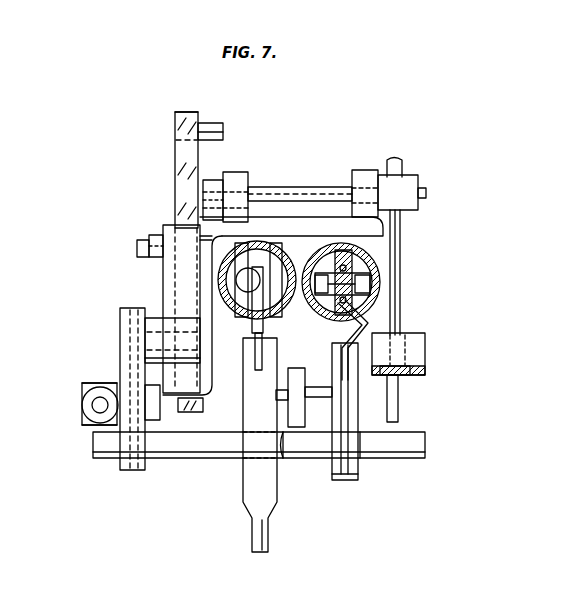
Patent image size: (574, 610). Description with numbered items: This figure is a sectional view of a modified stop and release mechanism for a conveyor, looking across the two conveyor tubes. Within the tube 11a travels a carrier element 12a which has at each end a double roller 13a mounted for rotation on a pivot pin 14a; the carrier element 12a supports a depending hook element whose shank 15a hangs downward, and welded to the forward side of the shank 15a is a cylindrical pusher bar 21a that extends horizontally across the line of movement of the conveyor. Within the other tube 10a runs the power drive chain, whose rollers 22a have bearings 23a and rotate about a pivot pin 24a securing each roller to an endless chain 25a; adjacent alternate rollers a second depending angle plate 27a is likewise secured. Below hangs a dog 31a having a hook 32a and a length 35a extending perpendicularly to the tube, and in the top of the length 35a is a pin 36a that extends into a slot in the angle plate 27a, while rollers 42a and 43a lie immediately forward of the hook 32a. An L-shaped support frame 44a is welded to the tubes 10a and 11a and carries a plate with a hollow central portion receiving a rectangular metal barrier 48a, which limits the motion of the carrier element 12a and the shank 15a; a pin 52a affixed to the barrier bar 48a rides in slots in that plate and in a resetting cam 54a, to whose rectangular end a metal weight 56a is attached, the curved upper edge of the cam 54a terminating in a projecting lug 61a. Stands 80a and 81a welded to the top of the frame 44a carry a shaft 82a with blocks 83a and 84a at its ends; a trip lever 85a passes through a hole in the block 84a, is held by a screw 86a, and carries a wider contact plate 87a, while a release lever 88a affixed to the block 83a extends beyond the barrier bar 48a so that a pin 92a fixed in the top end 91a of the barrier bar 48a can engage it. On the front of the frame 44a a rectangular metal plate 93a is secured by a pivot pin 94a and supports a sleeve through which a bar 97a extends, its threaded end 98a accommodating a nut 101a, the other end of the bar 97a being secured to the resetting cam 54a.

The tube 10a is at (306, 254).
The tube 11a is at (237, 325).
The carrier element 12a is at (263, 326).
The double roller 13a is at (273, 258).
The pivot pin 14a is at (236, 282).
The shank 15a is at (246, 484).
The cylindrical pusher bar 21a is at (425, 441).
The roller 22a is at (348, 262).
The bearing 23a is at (346, 270).
The pivot pin 24a is at (372, 284).
The endless chain 25a is at (398, 386).
The second depending angle plate 27a is at (362, 320).
The dog 31a is at (335, 443).
The hook 32a is at (352, 478).
The length 35a is at (379, 445).
The pin 36a is at (296, 369).
The roller 42a is at (396, 414).
The roller 43a is at (282, 435).
The L-shaped support frame 44a is at (170, 270).
The rectangular metal barrier 48a is at (186, 160).
The pin 52a is at (136, 247).
The resetting cam 54a is at (150, 294).
The metal weight 56a is at (133, 470).
The projecting lug 61a is at (155, 235).
The stand 80a is at (236, 180).
The stand 81a is at (365, 178).
The shaft 82a is at (302, 188).
The block 83a is at (213, 180).
The block 84a is at (410, 180).
The trip lever 85a is at (402, 268).
The screw 86a is at (428, 193).
The contact plate 87a is at (418, 352).
The release lever 88a is at (205, 196).
The top end 91a is at (176, 117).
The pin 92a is at (213, 128).
The rectangular metal plate 93a is at (157, 322).
The pivot pin 94a is at (148, 347).
The bar 97a is at (98, 405).
The threaded end 98a is at (92, 397).
The nut 101a is at (90, 420).